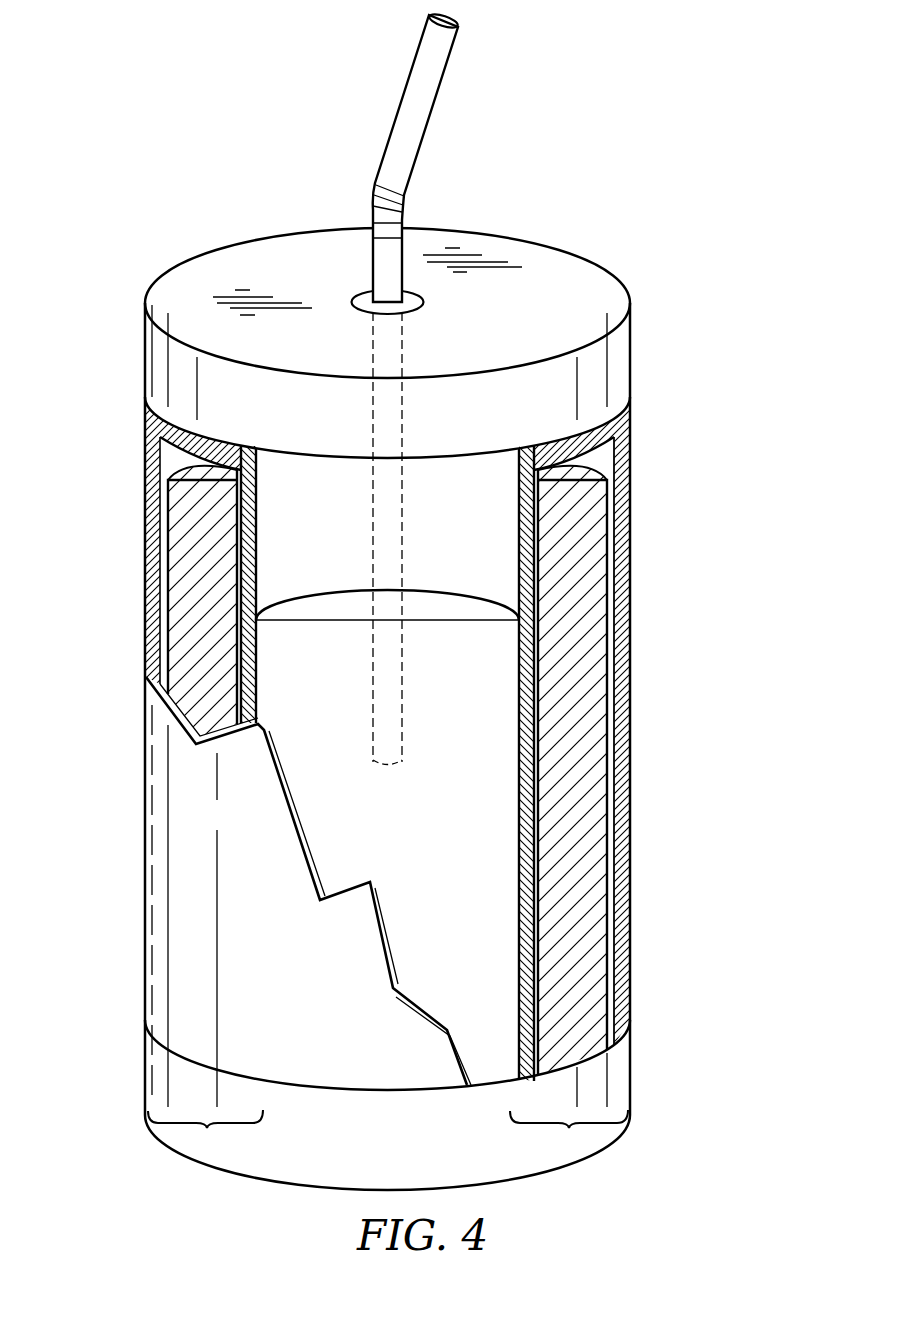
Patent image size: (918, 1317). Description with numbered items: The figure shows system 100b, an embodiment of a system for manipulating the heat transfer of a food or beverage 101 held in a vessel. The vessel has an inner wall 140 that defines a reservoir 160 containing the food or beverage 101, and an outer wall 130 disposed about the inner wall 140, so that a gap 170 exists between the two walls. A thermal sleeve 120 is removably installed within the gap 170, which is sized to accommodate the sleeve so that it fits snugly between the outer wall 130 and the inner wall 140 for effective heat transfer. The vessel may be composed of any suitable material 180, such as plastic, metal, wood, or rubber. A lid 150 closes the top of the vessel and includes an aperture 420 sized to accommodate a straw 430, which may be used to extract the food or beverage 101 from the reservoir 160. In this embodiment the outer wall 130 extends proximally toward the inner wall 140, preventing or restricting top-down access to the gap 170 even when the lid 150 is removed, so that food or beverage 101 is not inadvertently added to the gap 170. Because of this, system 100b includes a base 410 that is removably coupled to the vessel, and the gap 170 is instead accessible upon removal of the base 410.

The system 100b is at (672, 107).
The food or beverage 101 is at (404, 812).
The thermal sleeve 120 is at (192, 550).
The outer wall 130 is at (146, 593).
The inner wall 140 is at (258, 532).
The lid 150 is at (252, 258).
The reservoir 160 is at (490, 845).
The gap 170 is at (388, 1132).
The material 180 is at (160, 936).
The base 410 is at (404, 1142).
The aperture 420 is at (422, 301).
The straw 430 is at (437, 96).